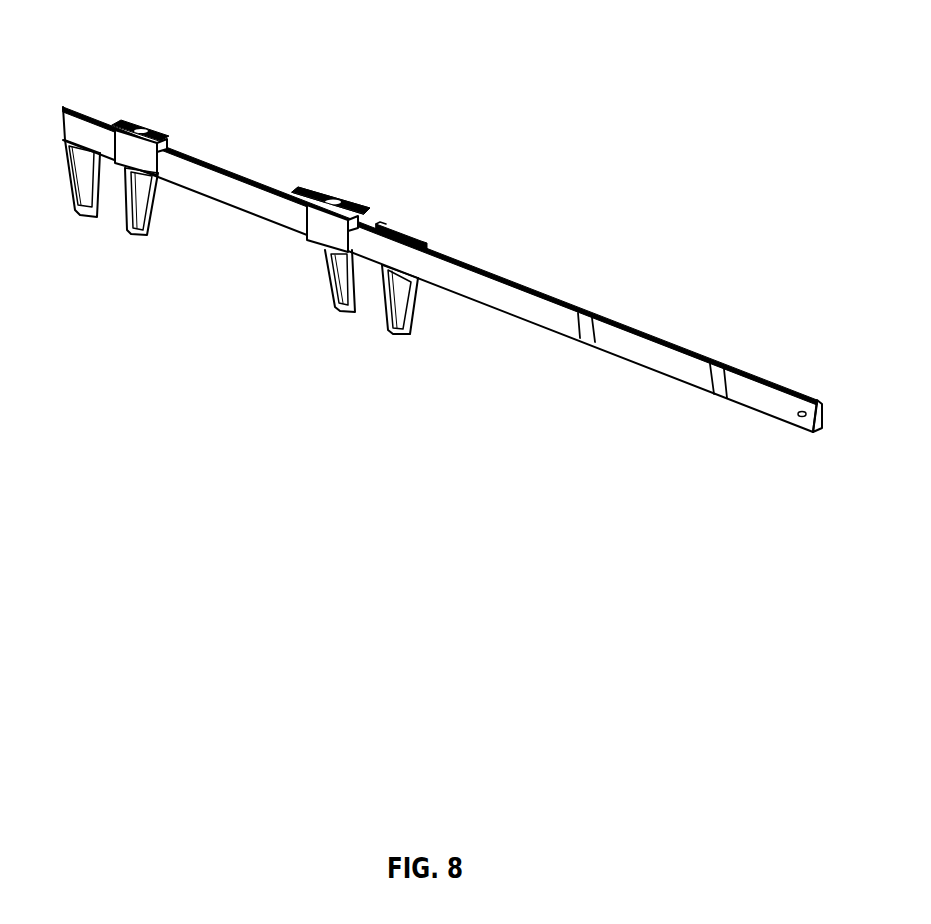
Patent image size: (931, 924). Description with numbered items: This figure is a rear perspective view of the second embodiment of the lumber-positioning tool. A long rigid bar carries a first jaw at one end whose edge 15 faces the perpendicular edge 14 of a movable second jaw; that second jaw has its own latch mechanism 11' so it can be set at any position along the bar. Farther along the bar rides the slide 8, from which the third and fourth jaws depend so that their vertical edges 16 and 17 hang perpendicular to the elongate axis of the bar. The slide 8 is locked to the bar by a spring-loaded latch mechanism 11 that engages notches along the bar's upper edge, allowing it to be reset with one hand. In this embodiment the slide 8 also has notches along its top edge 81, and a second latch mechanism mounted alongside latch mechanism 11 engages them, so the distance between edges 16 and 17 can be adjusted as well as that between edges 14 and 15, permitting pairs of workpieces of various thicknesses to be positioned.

The slide 8 is at (417, 238).
The top edge 81 is at (403, 233).
The latch mechanism 11' is at (131, 93).
The spring-loaded latch mechanism 11 is at (312, 159).
The edge 15 is at (85, 215).
The perpendicular edge 14 is at (123, 215).
The vertical edge 16 is at (338, 305).
The vertical edge 17 is at (383, 310).